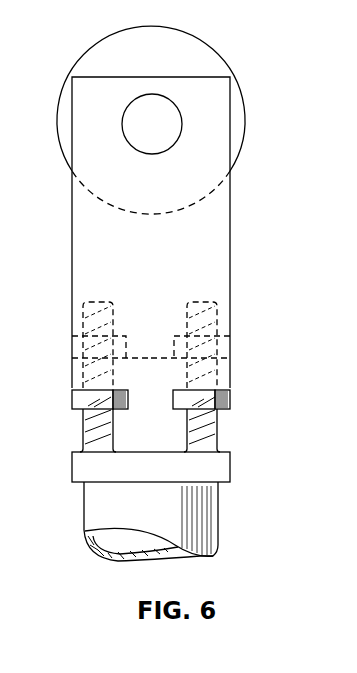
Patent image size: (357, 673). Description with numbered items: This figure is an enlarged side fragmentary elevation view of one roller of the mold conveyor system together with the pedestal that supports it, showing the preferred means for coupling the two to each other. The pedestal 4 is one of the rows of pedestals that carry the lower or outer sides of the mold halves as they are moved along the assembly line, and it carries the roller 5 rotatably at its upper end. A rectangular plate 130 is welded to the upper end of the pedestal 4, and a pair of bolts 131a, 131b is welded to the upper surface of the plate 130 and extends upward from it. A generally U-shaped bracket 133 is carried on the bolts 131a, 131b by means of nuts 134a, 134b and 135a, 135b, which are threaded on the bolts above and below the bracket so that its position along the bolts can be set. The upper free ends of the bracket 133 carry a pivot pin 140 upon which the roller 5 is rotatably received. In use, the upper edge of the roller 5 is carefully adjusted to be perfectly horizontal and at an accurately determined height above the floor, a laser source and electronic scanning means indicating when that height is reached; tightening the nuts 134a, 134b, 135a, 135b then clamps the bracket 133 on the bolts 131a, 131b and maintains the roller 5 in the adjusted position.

The pedestal 4 is at (219, 510).
The roller 5 is at (237, 163).
The rectangular plate 130 is at (231, 466).
The bolt 131a is at (217, 430).
The bolt 131b is at (86, 430).
The U-shaped bracket 133 is at (230, 230).
The nut 134a is at (231, 395).
The nut 134b is at (75, 395).
The nut 135a is at (232, 342).
The nut 135b is at (71, 349).
The pivot pin 140 is at (173, 115).